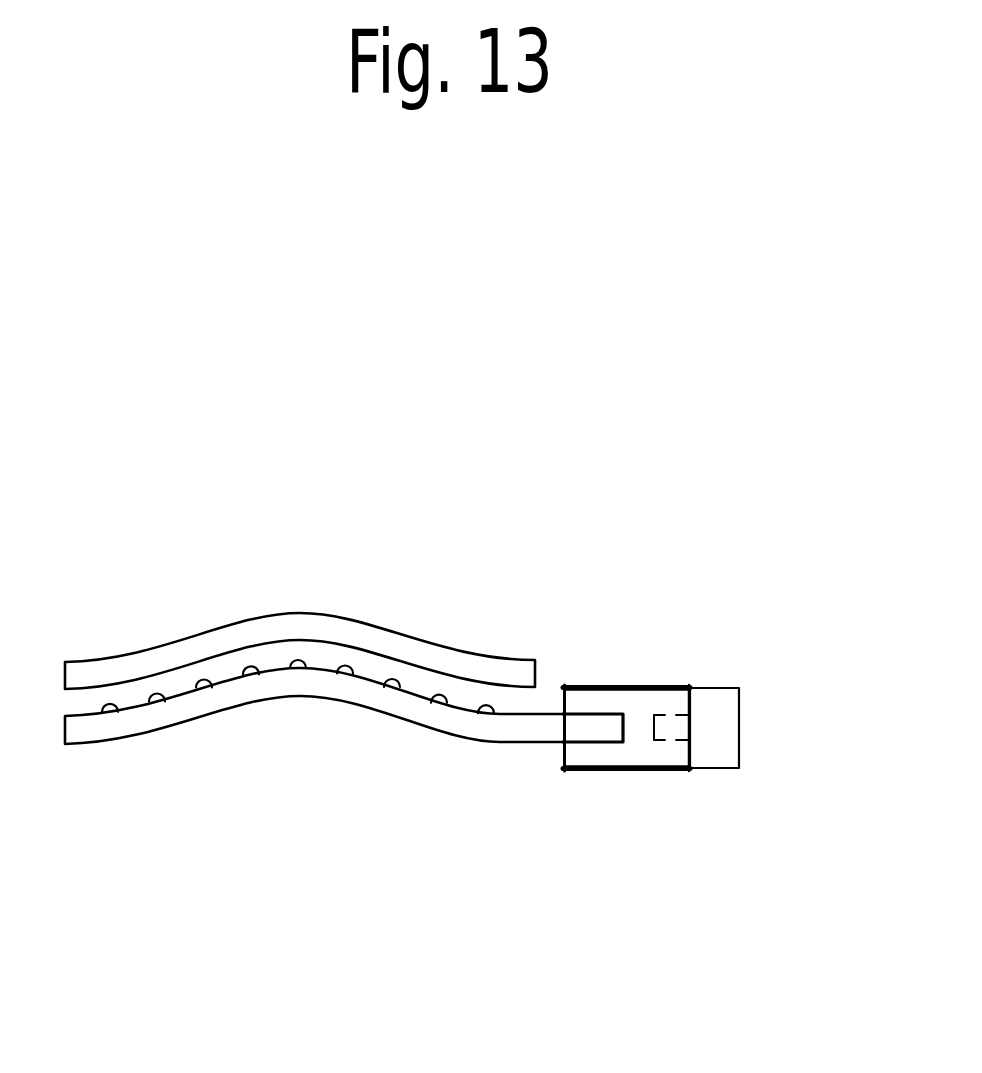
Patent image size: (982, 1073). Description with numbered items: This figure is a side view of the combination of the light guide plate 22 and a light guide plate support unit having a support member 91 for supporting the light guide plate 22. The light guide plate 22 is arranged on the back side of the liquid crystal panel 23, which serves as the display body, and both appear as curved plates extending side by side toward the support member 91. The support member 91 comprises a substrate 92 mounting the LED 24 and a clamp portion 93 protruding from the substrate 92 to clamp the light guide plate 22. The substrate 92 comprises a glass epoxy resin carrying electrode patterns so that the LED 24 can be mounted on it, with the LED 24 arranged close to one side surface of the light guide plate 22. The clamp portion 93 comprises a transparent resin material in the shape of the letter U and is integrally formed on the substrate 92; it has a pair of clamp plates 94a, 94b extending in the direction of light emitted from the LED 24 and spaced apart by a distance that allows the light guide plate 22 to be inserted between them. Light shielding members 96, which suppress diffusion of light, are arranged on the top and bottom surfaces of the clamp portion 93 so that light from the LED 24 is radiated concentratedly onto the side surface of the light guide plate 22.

The light guide plate 22 is at (158, 720).
The liquid crystal panel 23 is at (263, 625).
The LED 24 is at (673, 737).
The support member 91 is at (652, 556).
The substrate 92 is at (713, 697).
The clamp portion 93 is at (661, 654).
The clamp plate 94a is at (588, 705).
The clamp plate 94b is at (598, 757).
The light shielding member 96 is at (677, 687).